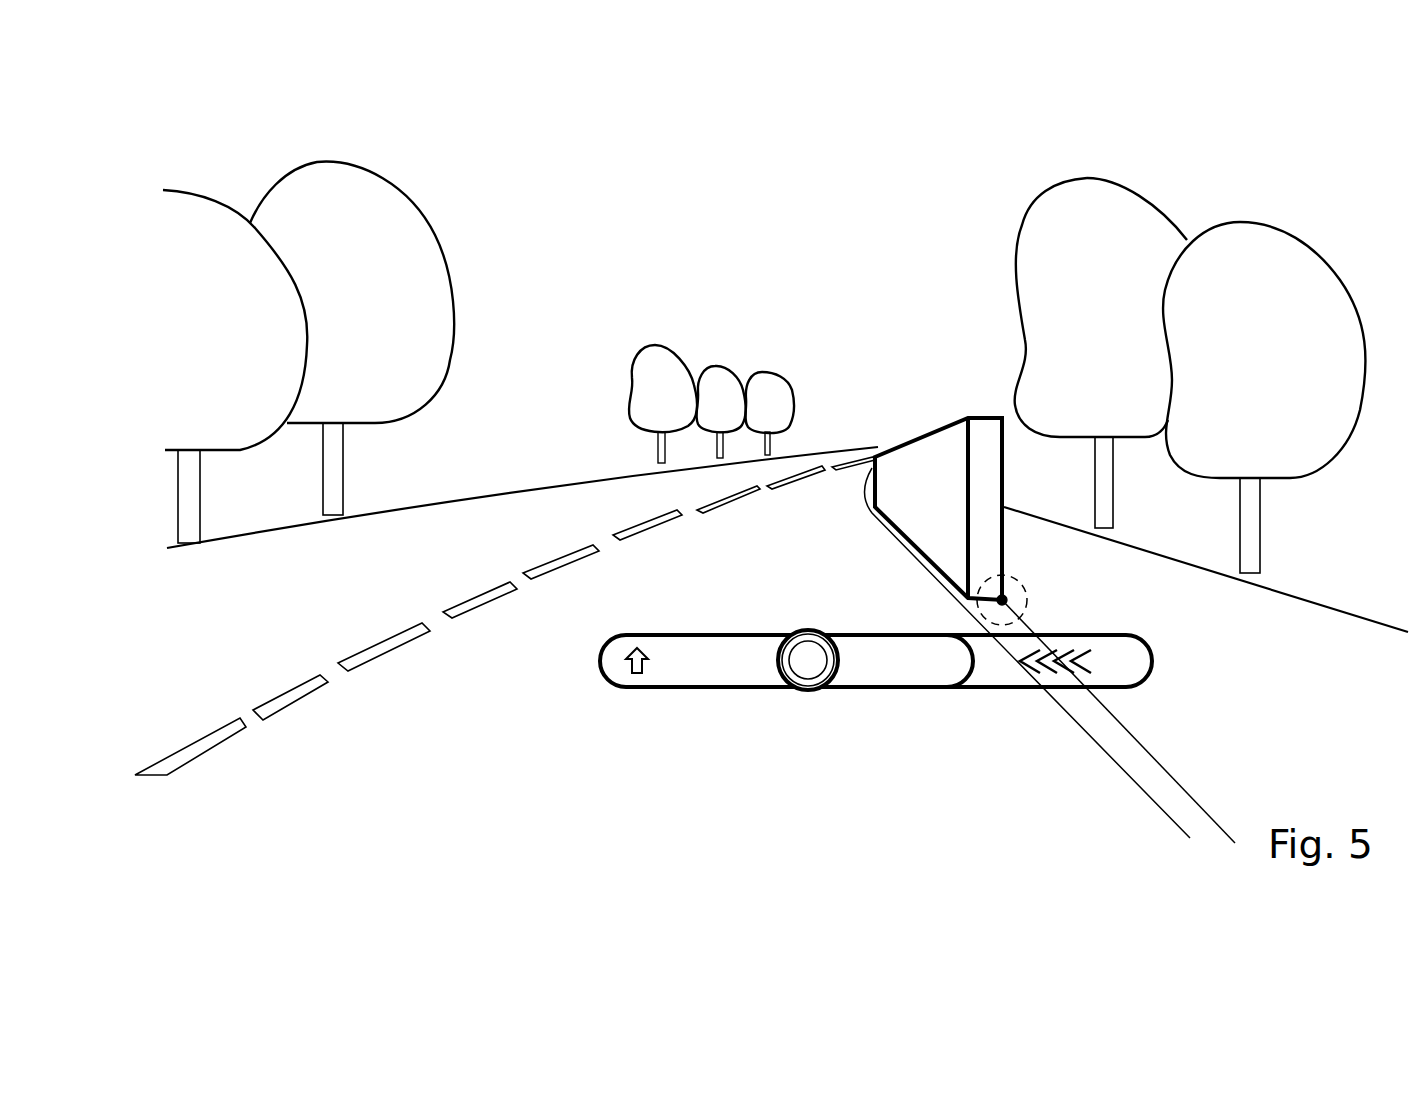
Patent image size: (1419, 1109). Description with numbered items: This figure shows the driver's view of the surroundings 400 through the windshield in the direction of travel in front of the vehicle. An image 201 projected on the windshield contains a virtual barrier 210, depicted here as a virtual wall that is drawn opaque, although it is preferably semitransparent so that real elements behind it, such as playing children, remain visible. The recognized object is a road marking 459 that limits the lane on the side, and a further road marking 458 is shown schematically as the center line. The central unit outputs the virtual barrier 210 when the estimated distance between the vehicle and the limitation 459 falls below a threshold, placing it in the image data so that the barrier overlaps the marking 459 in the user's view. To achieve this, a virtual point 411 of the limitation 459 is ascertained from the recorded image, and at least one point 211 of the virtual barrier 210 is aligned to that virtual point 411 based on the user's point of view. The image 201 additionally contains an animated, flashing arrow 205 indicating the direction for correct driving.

The surroundings 400 is at (547, 409).
The further road marking 458 is at (382, 647).
The road marking 459 is at (1122, 748).
The virtual barrier 210 is at (1003, 438).
The point of the virtual barrier 211 is at (1002, 600).
The virtual point 411 is at (1020, 574).
The image 201 is at (863, 684).
The arrow 205 is at (1128, 662).